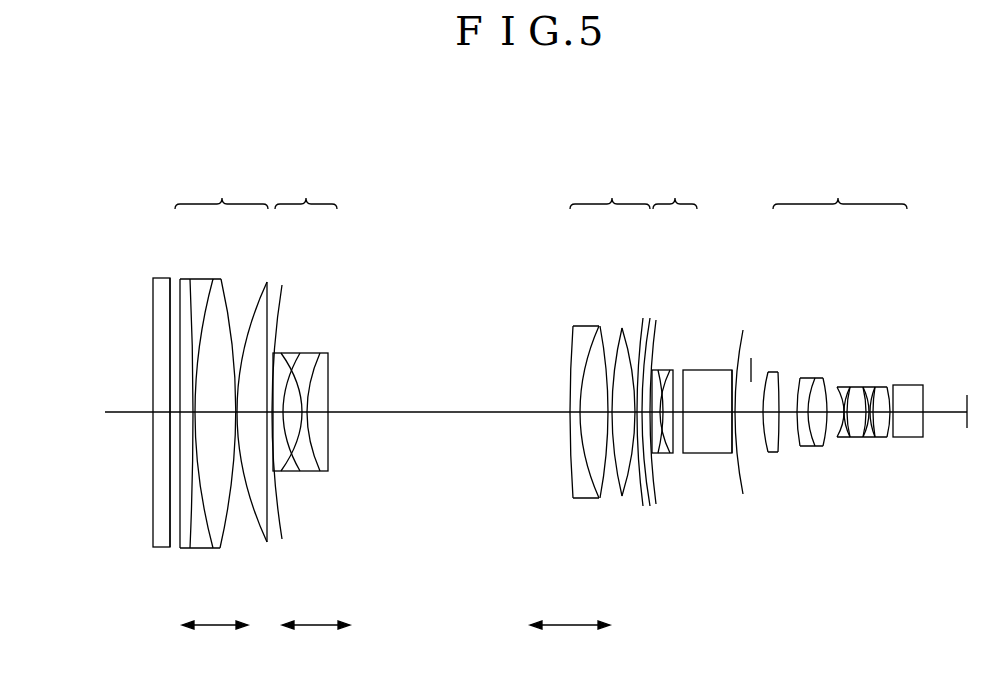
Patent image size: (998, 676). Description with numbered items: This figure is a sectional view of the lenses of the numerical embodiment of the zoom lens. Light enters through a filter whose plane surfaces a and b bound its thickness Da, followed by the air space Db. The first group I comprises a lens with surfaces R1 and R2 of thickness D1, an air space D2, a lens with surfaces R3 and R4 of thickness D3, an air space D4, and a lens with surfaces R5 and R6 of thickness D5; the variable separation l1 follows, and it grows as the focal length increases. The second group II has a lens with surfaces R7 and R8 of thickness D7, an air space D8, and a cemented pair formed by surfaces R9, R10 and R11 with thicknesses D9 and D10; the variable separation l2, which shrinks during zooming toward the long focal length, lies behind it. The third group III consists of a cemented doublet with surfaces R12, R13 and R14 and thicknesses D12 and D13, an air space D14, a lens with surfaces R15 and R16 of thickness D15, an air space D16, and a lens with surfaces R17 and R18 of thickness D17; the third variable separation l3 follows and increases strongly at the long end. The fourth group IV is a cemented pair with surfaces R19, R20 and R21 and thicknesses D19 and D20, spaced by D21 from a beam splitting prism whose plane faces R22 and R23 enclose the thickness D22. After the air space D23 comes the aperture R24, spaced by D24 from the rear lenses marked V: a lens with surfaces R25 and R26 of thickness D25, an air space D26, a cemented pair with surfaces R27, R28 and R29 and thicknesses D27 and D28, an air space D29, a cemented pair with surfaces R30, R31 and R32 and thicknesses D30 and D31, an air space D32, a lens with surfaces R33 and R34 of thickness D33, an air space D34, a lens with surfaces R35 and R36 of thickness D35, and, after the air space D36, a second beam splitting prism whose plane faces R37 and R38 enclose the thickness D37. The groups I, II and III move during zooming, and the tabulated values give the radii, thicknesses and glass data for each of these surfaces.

The filter surface a is at (153, 548).
The filter surface b is at (170, 548).
The lens surface R1 is at (180, 548).
The lens surface R2 is at (203, 550).
The lens surface R3 is at (216, 550).
The lens surface R4 is at (228, 542).
The lens surface R5 is at (262, 542).
The lens surface R6 is at (270, 541).
The lens surface R7 is at (285, 472).
The lens surface R8 is at (296, 472).
The lens surface R9 is at (312, 472).
The lens surface R10 is at (322, 472).
The lens surface R11 is at (329, 462).
The lens surface R12 is at (572, 495).
The lens surface R13 is at (593, 500).
The lens surface R14 is at (607, 500).
The lens surface R15 is at (622, 498).
The lens surface R16 is at (636, 500).
The lens surface R17 is at (645, 506).
The lens surface R18 is at (651, 506).
The lens surface R19 is at (663, 455).
The lens surface R20 is at (670, 456).
The lens surface R21 is at (676, 455).
The prism surface R22 is at (685, 455).
The prism surface R23 is at (720, 455).
The aperture R24 is at (744, 480).
The lens surface R25 is at (766, 452).
The lens surface R26 is at (778, 452).
The lens surface R27 is at (800, 446).
The lens surface R28 is at (808, 446).
The lens surface R29 is at (825, 446).
The lens surface R30 is at (838, 437).
The lens surface R31 is at (848, 437).
The lens surface R32 is at (862, 437).
The lens surface R33 is at (869, 437).
The lens surface R34 is at (877, 437).
The lens surface R35 is at (887, 437).
The lens surface R36 is at (893, 437).
The prism surface R37 is at (893, 430).
The prism surface R38 is at (923, 430).
The filter thickness Da is at (163, 412).
The air separation Db is at (172, 412).
The lens thickness D1 is at (185, 280).
The air separation D2 is at (192, 412).
The lens thickness D3 is at (226, 407).
The air separation D4 is at (238, 370).
The lens thickness D5 is at (252, 411).
The lens thickness D7 is at (292, 370).
The air separation D8 is at (302, 357).
The lens thickness D9 is at (315, 370).
The lens thickness D10 is at (328, 387).
The lens thickness D12 is at (571, 410).
The lens thickness D13 is at (580, 383).
The air separation D14 is at (605, 326).
The lens thickness D15 is at (619, 330).
The air separation D16 is at (641, 332).
The lens thickness D17 is at (654, 333).
The lens thickness D19 is at (672, 397).
The lens thickness D20 is at (680, 390).
The air separation D21 is at (690, 380).
The prism thickness D22 is at (713, 395).
The air separation D23 is at (745, 375).
The air separation D24 is at (766, 372).
The lens thickness D25 is at (788, 375).
The air separation D26 is at (806, 378).
The lens thickness D27 is at (816, 376).
The lens thickness D28 is at (828, 380).
The air separation D29 is at (843, 388).
The lens thickness D30 is at (856, 388).
The lens thickness D31 is at (866, 388).
The air separation D32 is at (876, 388).
The lens thickness D33 is at (884, 388).
The air separation D34 is at (890, 388).
The lens thickness D35 is at (895, 388).
The air separation D36 is at (923, 385).
The prism thickness D37 is at (912, 405).
The variable air separation l1 is at (270, 300).
The variable air separation l2 is at (457, 412).
The variable air separation l3 is at (664, 358).
The first group I is at (222, 182).
The second group II is at (306, 182).
The third group III is at (612, 182).
The fourth group IV is at (676, 182).
The fifth lens group V is at (838, 182).